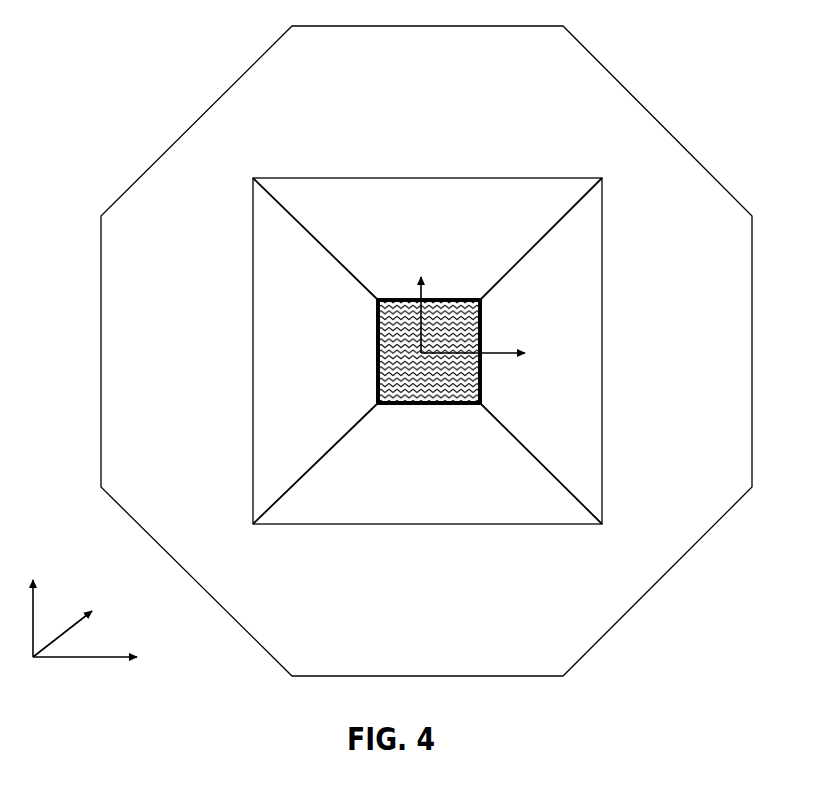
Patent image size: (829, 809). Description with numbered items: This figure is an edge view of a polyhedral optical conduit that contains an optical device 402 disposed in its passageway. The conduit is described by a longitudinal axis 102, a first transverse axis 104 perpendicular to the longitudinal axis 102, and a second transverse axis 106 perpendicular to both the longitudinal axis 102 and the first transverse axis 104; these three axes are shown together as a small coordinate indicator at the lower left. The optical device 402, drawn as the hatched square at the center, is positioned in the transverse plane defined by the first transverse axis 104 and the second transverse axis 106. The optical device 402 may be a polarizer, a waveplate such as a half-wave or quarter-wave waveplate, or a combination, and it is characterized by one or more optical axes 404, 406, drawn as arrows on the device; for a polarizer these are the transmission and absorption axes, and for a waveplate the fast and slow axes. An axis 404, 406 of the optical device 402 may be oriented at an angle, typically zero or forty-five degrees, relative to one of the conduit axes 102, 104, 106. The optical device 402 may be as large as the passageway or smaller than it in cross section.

The optical device 402 is at (443, 300).
The axis of the optical device 404 is at (419, 300).
The axis of the optical device 406 is at (502, 353).
The longitudinal axis 102 is at (84, 628).
The first transverse axis 104 is at (33, 603).
The second transverse axis 106 is at (114, 656).